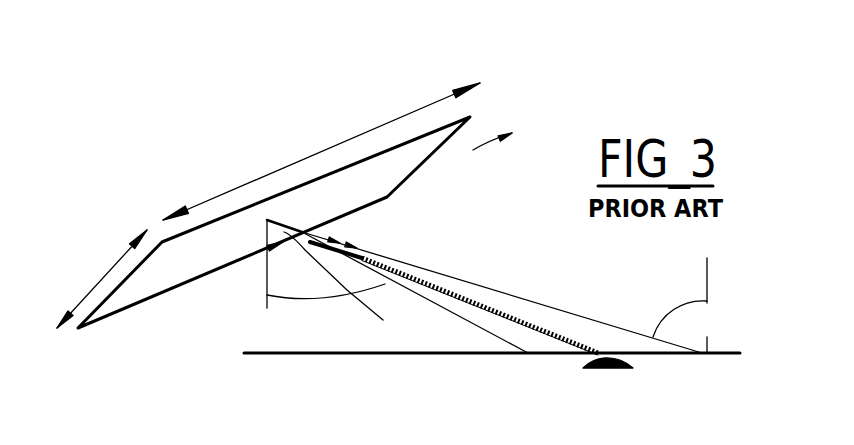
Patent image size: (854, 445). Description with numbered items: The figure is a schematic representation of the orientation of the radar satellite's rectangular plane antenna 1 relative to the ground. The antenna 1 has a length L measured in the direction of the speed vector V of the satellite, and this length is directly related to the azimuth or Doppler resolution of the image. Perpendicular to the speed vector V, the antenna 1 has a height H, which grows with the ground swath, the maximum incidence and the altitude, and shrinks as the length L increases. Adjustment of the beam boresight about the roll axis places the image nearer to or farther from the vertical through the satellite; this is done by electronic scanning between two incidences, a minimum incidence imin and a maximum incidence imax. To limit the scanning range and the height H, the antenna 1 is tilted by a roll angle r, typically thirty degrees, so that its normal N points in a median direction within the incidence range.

The rectangular plane antenna 1 is at (134, 309).
The height of the antenna H is at (102, 279).
The length of the antenna L is at (321, 151).
The speed vector of the satellite V is at (491, 158).
The normal to the antenna N is at (486, 336).
The roll angle r is at (326, 303).
The minimum incidence imin is at (422, 353).
The maximum incidence imax is at (522, 292).